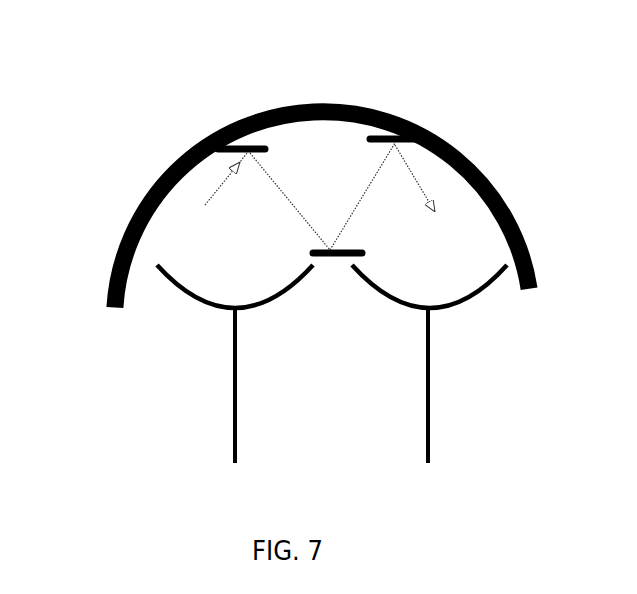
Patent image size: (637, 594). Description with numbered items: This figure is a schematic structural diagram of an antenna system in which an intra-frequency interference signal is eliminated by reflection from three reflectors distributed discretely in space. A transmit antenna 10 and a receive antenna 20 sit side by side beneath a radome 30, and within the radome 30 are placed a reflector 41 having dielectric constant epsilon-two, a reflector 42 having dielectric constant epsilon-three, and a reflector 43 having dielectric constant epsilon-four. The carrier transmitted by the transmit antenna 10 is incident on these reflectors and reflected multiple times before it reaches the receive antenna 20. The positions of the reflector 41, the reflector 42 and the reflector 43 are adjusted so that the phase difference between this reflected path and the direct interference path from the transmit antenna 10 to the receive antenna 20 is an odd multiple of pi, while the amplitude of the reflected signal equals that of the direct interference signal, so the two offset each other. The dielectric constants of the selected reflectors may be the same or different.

The transmit antenna 10 is at (232, 388).
The receive antenna 20 is at (430, 388).
The radome 30 is at (178, 152).
The reflector 41 is at (253, 147).
The reflector 42 is at (403, 135).
The reflector 43 is at (330, 259).